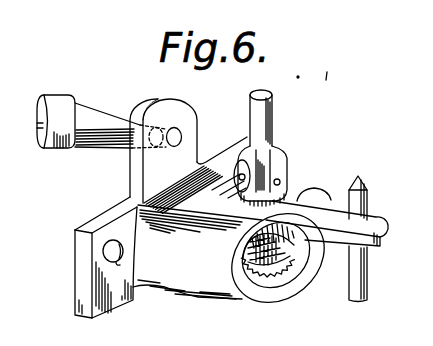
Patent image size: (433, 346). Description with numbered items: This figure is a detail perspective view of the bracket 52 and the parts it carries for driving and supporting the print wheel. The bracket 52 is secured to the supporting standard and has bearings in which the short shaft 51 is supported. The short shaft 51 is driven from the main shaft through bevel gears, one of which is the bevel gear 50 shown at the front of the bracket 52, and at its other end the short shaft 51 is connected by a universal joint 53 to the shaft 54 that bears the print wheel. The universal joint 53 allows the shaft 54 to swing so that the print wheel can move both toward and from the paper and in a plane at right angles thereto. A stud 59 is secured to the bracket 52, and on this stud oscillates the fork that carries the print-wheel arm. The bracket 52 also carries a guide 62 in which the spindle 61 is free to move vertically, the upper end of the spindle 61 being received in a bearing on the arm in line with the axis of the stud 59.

The bevel gear 50 is at (270, 253).
The short shaft 51 is at (288, 192).
The bracket 52 is at (208, 210).
The universal joint 53 is at (283, 158).
The shaft 54 is at (273, 120).
The stud 59 is at (97, 120).
The spindle 61 is at (368, 199).
The guide 62 is at (381, 226).